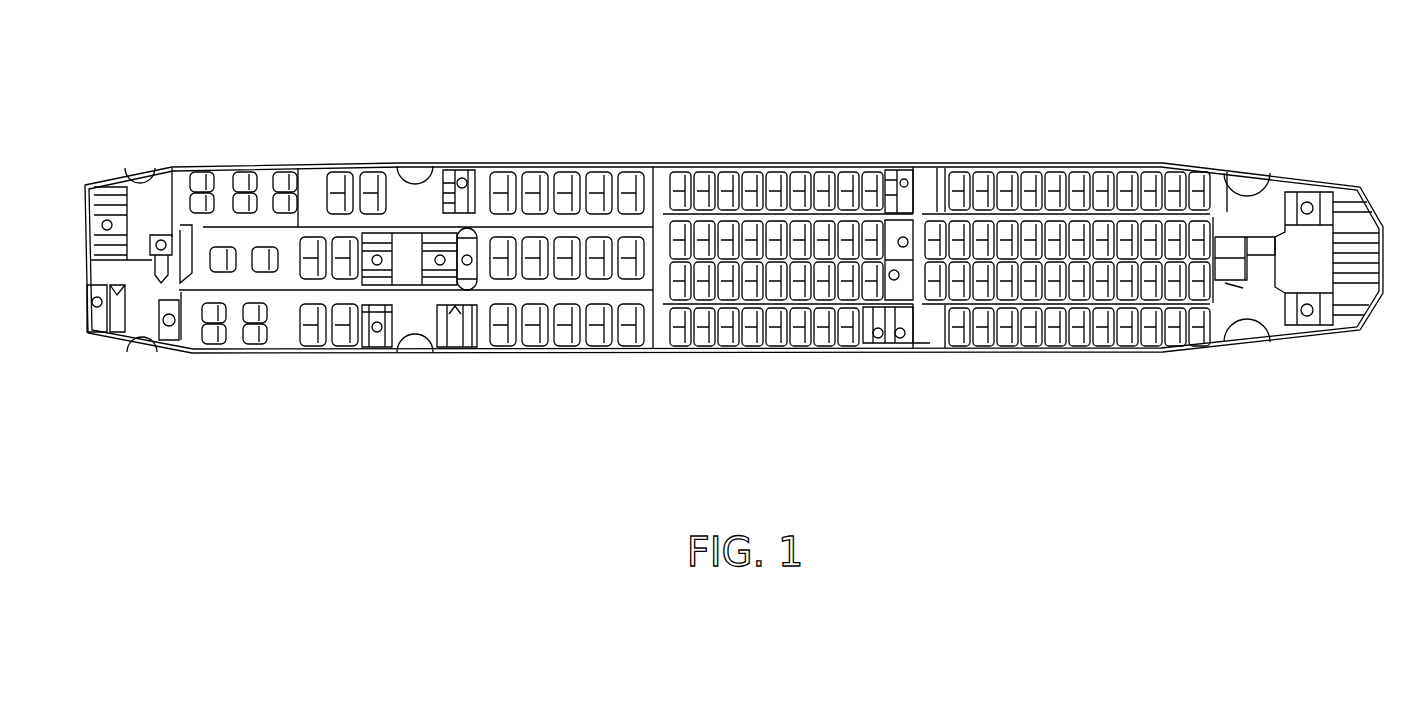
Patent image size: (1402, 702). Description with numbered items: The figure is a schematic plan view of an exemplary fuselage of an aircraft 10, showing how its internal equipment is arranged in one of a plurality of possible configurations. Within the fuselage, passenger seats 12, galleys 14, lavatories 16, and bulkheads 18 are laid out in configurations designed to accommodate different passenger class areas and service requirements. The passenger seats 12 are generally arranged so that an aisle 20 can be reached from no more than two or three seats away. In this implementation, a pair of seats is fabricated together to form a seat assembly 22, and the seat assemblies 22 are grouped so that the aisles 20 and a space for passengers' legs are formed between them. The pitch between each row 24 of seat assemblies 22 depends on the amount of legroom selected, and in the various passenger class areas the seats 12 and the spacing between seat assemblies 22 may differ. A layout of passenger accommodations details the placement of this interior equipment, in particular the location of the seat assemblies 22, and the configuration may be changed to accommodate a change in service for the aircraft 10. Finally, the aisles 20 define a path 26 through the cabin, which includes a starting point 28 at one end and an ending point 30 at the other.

The aircraft 10 is at (564, 88).
The passenger seats 12 is at (727, 178).
The galleys 14 is at (104, 223).
The lavatories 16 is at (458, 180).
The bulkheads 18 is at (302, 205).
The aisle 20 is at (486, 226).
The seat assembly 22 is at (778, 340).
The row 24 is at (1038, 360).
The path 26 is at (265, 223).
The starting point 28 is at (936, 176).
The ending point 30 is at (1225, 212).